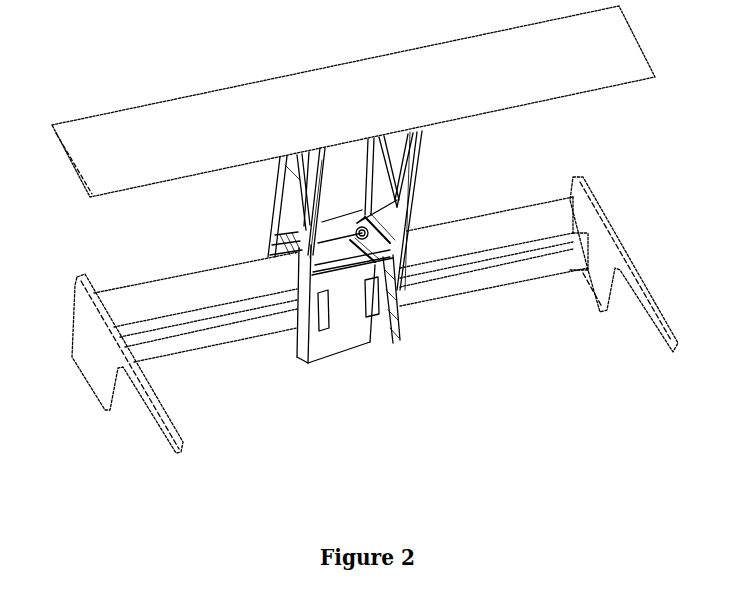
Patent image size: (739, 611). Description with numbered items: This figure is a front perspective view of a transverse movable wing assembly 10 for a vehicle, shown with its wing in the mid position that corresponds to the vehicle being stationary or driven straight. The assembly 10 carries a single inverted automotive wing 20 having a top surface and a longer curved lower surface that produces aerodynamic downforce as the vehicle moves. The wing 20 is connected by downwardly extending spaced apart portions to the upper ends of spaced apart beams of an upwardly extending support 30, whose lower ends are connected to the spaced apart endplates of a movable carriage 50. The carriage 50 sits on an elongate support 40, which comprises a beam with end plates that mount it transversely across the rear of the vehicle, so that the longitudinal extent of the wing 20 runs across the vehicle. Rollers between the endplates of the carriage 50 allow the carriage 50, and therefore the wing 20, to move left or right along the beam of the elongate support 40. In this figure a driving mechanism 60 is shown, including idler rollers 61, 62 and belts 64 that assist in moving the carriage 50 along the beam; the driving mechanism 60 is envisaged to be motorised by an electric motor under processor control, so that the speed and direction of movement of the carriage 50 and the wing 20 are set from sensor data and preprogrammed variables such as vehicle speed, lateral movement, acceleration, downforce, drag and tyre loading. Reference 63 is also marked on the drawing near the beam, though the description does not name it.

The movable wing assembly 10 is at (369, 229).
The wing 20 is at (226, 70).
The upwardly extending support 30 is at (259, 201).
The elongate support 40 is at (375, 314).
The movable carriage 50 is at (334, 370).
The driving mechanism 60 is at (484, 288).
The idler roller 61 is at (573, 241).
The idler roller 62 is at (128, 330).
The rail 63 is at (242, 317).
The belts 64 is at (533, 253).